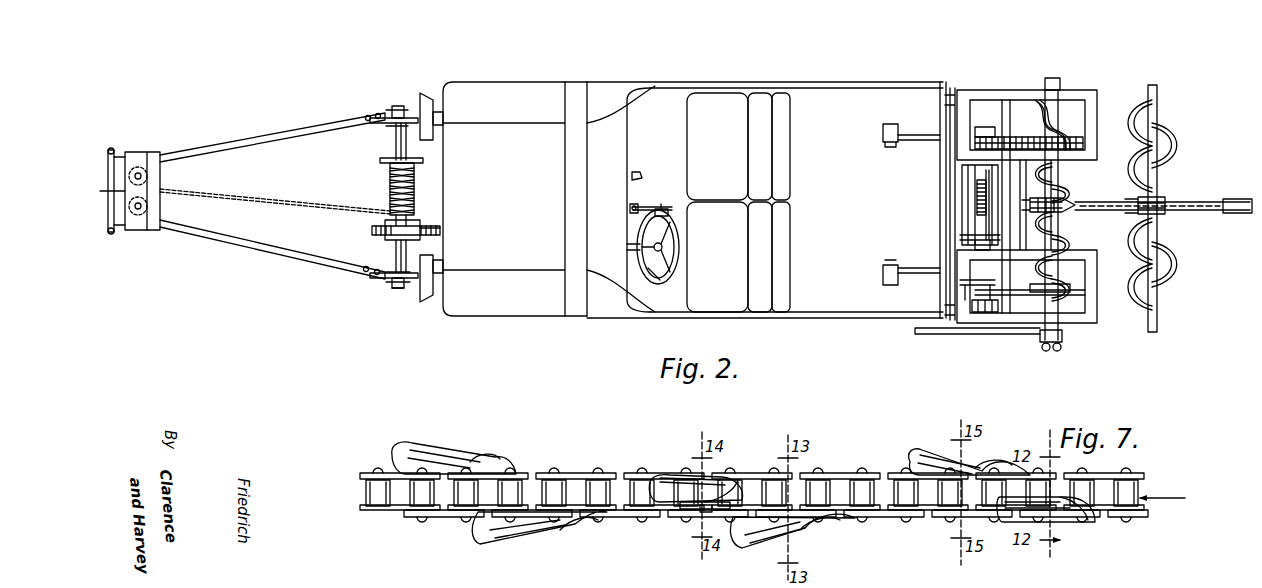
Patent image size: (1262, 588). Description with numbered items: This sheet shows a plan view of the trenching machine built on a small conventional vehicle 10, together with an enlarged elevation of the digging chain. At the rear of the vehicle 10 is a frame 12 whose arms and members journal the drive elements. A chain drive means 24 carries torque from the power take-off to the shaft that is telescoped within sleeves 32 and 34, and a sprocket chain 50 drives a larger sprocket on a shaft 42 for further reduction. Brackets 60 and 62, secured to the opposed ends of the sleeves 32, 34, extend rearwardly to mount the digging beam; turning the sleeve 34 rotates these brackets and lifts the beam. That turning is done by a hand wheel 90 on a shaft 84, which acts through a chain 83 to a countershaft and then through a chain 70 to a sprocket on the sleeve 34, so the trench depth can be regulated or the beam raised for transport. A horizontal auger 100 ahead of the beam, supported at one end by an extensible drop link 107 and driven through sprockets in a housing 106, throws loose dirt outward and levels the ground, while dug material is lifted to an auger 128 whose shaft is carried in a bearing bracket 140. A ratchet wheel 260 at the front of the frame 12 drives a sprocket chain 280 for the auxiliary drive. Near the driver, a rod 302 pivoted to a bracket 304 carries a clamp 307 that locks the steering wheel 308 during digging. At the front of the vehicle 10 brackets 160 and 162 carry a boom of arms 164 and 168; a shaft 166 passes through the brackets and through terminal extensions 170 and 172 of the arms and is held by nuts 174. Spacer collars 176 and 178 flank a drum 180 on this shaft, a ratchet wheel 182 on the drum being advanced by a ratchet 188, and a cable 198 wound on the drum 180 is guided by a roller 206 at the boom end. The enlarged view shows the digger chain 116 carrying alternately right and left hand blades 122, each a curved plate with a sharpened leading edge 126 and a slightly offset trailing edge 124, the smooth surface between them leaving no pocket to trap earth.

In FIG. 2, the vehicle 10 is at (592, 80).
In FIG. 2, the frame 12 is at (975, 88).
In FIG. 2, the chain drive means 24 is at (1024, 152).
In FIG. 2, the sleeve 32 is at (1070, 168).
In FIG. 2, the sleeve 34 is at (1075, 252).
In FIG. 2, the shaft 42 is at (968, 230).
In FIG. 2, the sprocket chain 50 is at (1018, 137).
In FIG. 2, the bracket 60 is at (1065, 200).
In FIG. 2, the bracket 62 is at (1068, 215).
In FIG. 2, the chain 70 is at (1022, 296).
In FIG. 2, the chain 83 is at (978, 300).
In FIG. 2, the shaft 84 is at (984, 312).
In FIG. 2, the hand wheel 90 is at (915, 331).
In FIG. 2, the horizontal auger 100 is at (1038, 100).
In FIG. 2, the housing 106 is at (1066, 343).
In FIG. 2, the drop link 107 is at (1058, 78).
In FIG. 2, the blade 122 is at (1240, 200).
In FIG. 7, the blade 122 is at (675, 478).
In FIG. 7, the trailing edge 124 is at (580, 532).
In FIG. 7, the leading edge 126 is at (480, 540).
In FIG. 2, the auger 128 is at (1160, 276).
In FIG. 2, the bearing bracket 140 is at (1160, 200).
In FIG. 7, the chain 116 is at (908, 512).
In FIG. 2, the bracket 160 is at (425, 97).
In FIG. 2, the bracket 162 is at (425, 295).
In FIG. 2, the arm 164 is at (268, 137).
In FIG. 2, the shaft 166 is at (394, 290).
In FIG. 2, the arm 168 is at (265, 262).
In FIG. 2, the terminal extension 170 is at (396, 117).
In FIG. 2, the terminal extension 172 is at (382, 280).
In FIG. 2, the nuts 174 is at (401, 110).
In FIG. 2, the spacer collar 176 is at (396, 256).
In FIG. 2, the spacer collar 178 is at (395, 147).
In FIG. 2, the drum 180 is at (395, 212).
In FIG. 2, the ratchet wheel 182 is at (372, 230).
In FIG. 2, the ratchet 188 is at (420, 232).
In FIG. 2, the cable 198 is at (253, 199).
In FIG. 2, the roller 206 is at (120, 150).
In FIG. 2, the ratchet wheel 260 is at (980, 200).
In FIG. 2, the sprocket chain 280 is at (968, 185).
In FIG. 2, the rod 302 is at (648, 206).
In FIG. 2, the bracket 304 is at (636, 185).
In FIG. 2, the clamp 307 is at (669, 212).
In FIG. 2, the steering wheel 308 is at (660, 280).